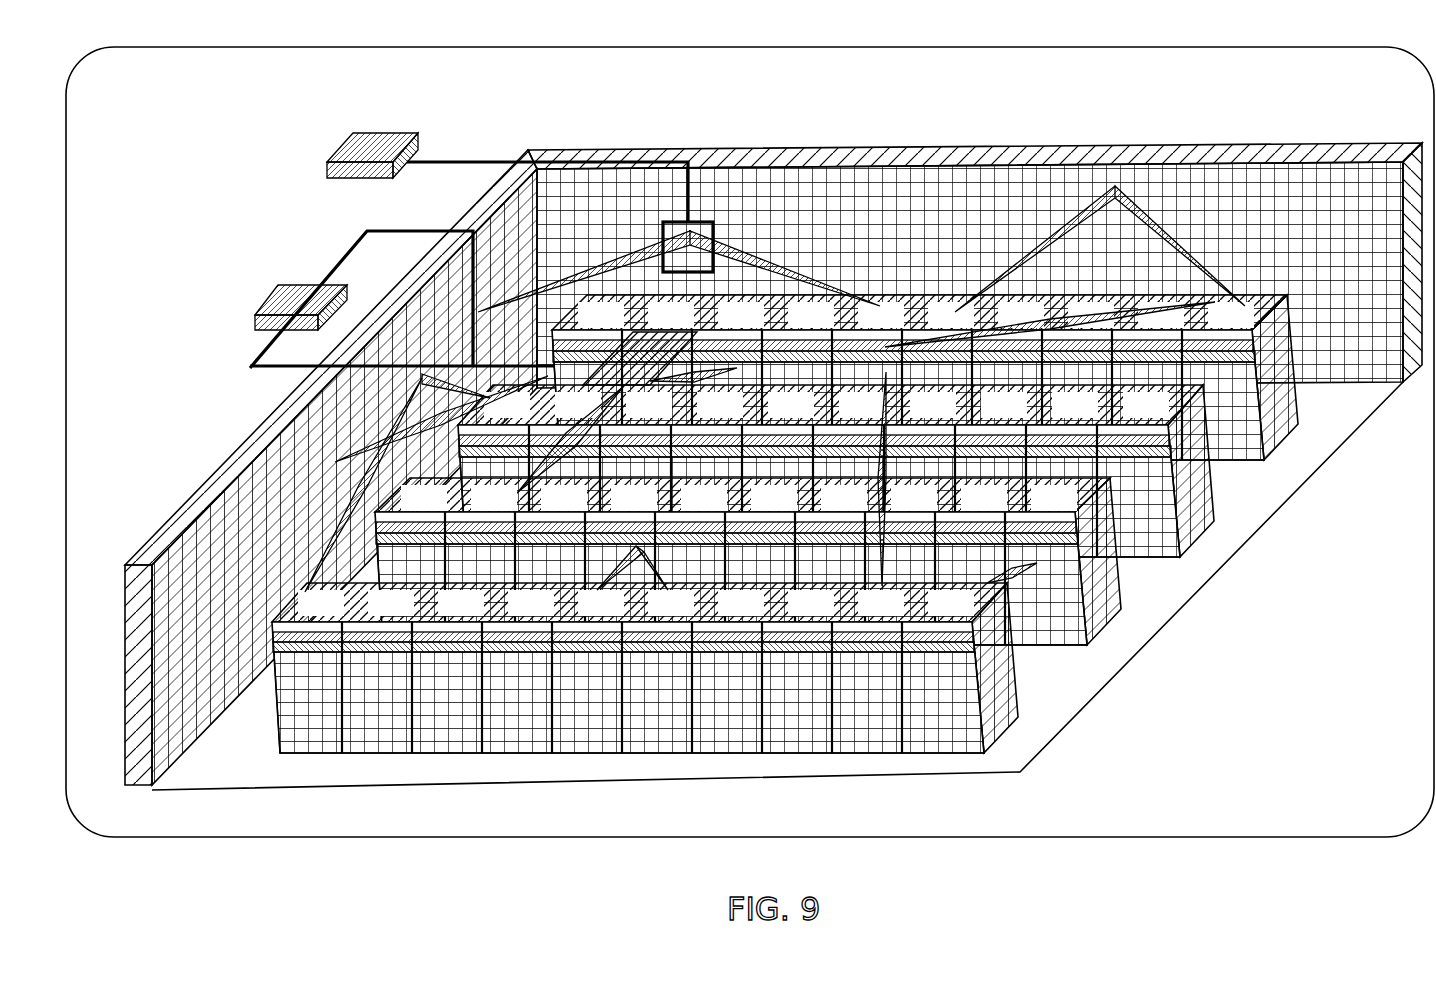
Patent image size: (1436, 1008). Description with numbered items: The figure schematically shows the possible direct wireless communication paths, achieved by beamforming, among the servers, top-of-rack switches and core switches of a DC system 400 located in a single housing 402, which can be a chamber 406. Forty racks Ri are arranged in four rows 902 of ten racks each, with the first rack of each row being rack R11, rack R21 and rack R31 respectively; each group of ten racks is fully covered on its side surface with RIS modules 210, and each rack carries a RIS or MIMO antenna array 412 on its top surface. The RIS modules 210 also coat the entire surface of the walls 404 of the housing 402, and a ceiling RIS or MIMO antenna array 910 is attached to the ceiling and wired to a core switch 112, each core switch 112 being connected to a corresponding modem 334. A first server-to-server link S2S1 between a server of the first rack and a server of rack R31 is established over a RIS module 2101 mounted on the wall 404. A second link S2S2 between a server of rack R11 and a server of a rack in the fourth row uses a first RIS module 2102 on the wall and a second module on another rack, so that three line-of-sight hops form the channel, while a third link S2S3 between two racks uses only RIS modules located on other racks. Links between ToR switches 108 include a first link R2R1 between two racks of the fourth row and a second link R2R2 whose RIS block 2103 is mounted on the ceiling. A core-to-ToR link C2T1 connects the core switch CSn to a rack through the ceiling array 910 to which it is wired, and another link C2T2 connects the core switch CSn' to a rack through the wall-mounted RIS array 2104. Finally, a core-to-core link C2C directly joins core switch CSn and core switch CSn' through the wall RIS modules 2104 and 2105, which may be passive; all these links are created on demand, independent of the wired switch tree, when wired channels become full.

The DC system 400 is at (1326, 37).
The housing 402 is at (193, 481).
The wall 404 is at (1290, 152).
The chamber 406 is at (1270, 501).
The row 902 is at (1165, 642).
The ceiling RIS or MIMO antenna array 910 is at (661, 250).
The RIS module 210 is at (1375, 320).
The RIS module 2101 is at (338, 460).
The first RIS module 2102 is at (475, 310).
The RIS block 2103 is at (880, 300).
The RIS block or RIS antenna array 2104 is at (688, 215).
The RIS module 2105 is at (580, 240).
The core switch 112 is at (272, 324).
The modem 334 is at (302, 278).
The RIS or MIMO antenna array 412 is at (790, 623).
The ToR switch 108 is at (845, 647).
The core switch CSn is at (276, 310).
The core switch CSn' is at (345, 156).
The first link S2S1 is at (298, 600).
The second link S2S2 is at (378, 360).
The third server to server link S2S3 is at (640, 610).
The link C2C is at (640, 335).
The first link C2T1 is at (548, 592).
The core switch to ToR switch link C2T2 is at (775, 262).
The first link R2R1 is at (1140, 245).
The second link R2R2 is at (975, 470).
The rack Ri is at (393, 757).
The rack R11 is at (748, 561).
The rack R21 is at (836, 471).
The rack R31 is at (925, 377).